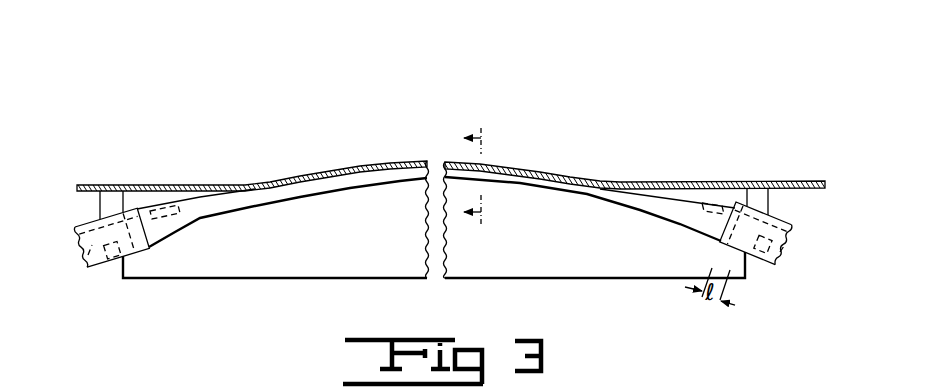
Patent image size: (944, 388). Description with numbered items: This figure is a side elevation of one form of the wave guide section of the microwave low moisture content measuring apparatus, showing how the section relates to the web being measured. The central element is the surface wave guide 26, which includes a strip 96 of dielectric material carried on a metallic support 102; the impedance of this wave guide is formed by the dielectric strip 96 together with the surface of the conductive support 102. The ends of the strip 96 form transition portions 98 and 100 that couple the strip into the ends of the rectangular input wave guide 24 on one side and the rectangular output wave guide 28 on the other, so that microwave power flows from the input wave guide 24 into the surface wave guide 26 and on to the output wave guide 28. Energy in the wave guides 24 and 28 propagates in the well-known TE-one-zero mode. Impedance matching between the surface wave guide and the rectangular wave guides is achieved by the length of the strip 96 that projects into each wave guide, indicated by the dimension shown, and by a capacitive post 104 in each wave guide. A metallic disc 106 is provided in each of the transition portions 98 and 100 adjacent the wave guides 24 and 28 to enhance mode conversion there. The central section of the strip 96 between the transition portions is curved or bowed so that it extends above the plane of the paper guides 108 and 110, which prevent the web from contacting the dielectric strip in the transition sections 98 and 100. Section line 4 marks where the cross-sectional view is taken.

The section line 4- 4 is at (466, 178).
The rectangular input wave guide 24 is at (97, 268).
The surface wave guide 26 is at (531, 129).
The rectangular output wave guide 28 is at (790, 226).
The strip 96 is at (597, 187).
The transition portion 98 is at (163, 228).
The transition portion 100 is at (688, 217).
The metallic support 102 is at (594, 268).
The capacitive post 104 is at (88, 253).
The metallic disc 106 is at (183, 207).
The paper guide 108 is at (126, 198).
The paper guide 110 is at (771, 201).